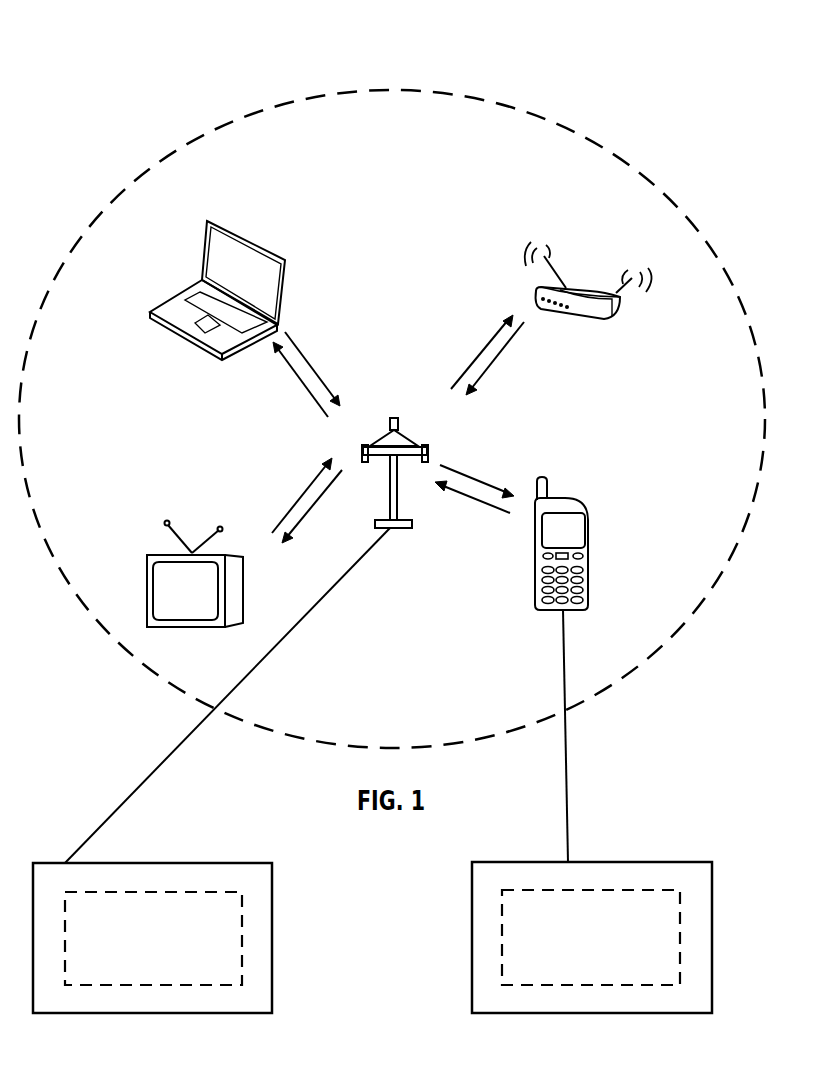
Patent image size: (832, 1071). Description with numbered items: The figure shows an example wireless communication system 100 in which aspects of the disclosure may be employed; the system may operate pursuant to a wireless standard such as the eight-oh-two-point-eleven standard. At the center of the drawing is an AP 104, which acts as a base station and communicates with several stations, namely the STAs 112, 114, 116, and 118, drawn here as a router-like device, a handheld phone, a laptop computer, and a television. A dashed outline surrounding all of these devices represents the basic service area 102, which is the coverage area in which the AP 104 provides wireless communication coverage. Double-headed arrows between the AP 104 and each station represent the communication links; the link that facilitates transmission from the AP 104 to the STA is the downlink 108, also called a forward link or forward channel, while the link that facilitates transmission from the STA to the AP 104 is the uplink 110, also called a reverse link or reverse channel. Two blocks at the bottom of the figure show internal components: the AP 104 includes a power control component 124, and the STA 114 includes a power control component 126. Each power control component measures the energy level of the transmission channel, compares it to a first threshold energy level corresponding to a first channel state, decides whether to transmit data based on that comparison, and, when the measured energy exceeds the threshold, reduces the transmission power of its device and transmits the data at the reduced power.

The wireless communication system 100 is at (139, 54).
The basic service area 102 is at (400, 90).
The AP 104 is at (395, 418).
The downlink 108 is at (478, 480).
The uplink 110 is at (490, 507).
The STA 112 is at (573, 290).
The STA 114 is at (561, 498).
The STA 116 is at (222, 230).
The STA 118 is at (177, 555).
The power control component 124 is at (242, 927).
The power control component 126 is at (680, 927).